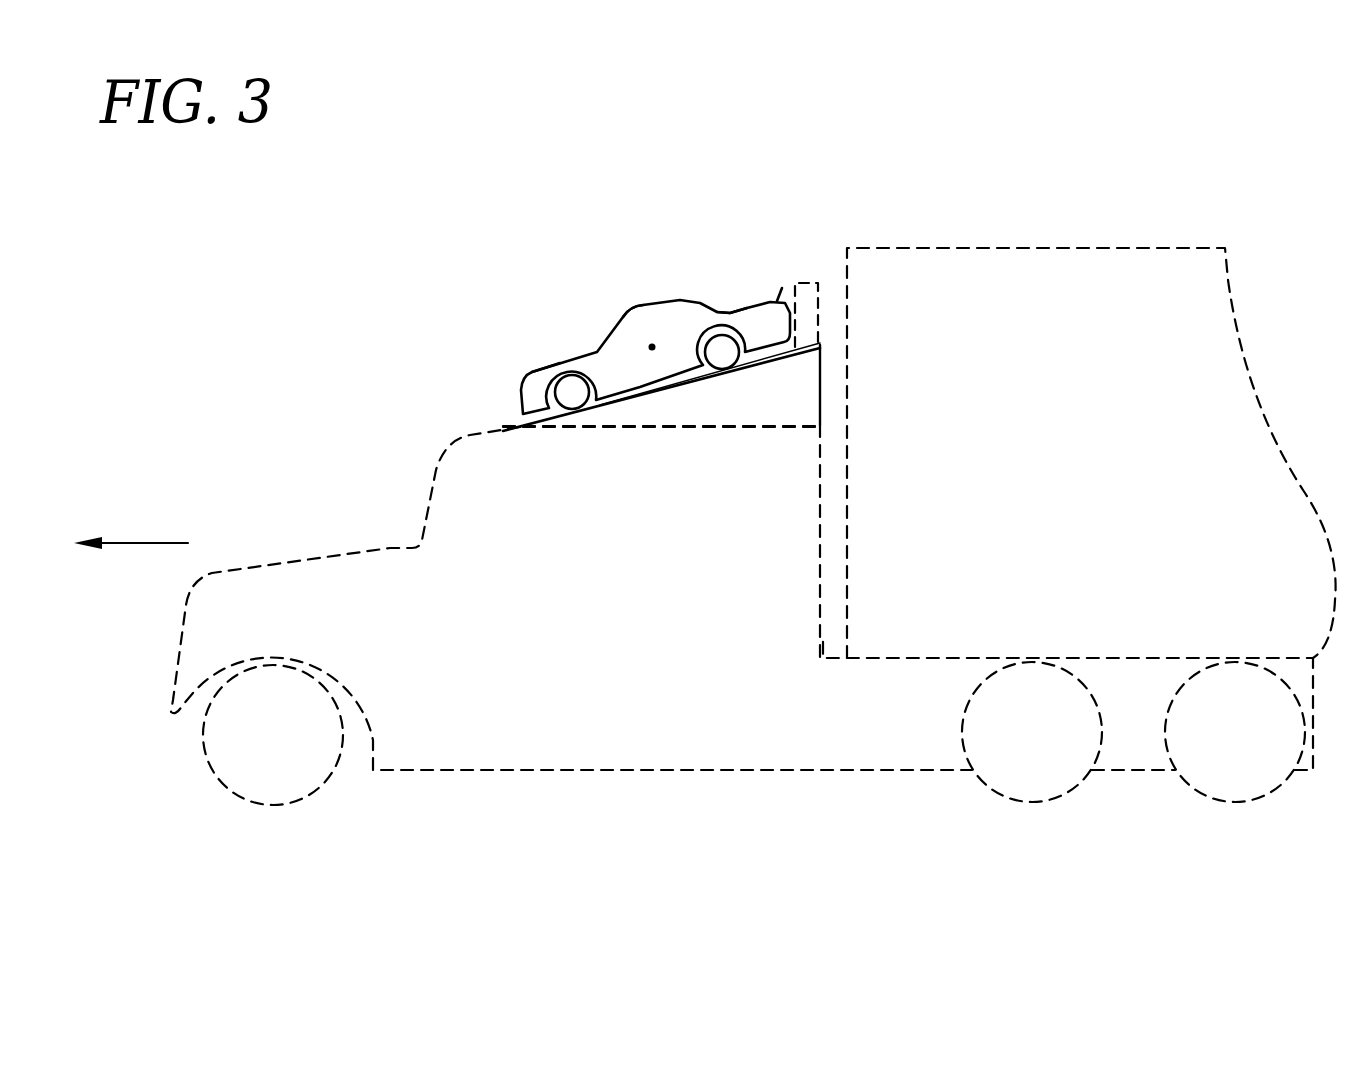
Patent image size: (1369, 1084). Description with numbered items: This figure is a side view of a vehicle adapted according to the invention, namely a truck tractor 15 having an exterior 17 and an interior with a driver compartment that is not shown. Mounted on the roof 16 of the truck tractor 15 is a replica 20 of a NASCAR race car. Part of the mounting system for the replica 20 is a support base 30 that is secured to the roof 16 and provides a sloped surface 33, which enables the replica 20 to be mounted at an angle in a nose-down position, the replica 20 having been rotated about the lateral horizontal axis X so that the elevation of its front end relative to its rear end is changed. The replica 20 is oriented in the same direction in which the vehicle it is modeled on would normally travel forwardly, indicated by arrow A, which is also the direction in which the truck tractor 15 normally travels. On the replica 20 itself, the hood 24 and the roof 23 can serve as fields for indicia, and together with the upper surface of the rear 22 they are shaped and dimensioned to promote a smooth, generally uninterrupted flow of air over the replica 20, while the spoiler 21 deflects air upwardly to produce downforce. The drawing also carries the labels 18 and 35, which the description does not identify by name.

The truck tractor 15 is at (383, 545).
The roof 16 is at (551, 432).
The exterior 17 is at (450, 757).
The cargo box 18 is at (1042, 248).
The replica 20 is at (608, 317).
The spoiler 21 is at (775, 299).
The rear 22 is at (740, 305).
The roof 23 is at (643, 310).
The hood 24 is at (552, 363).
The support base 30 is at (793, 403).
The sloped surface 33 is at (740, 362).
The platform stop bracket 35 is at (815, 283).
The arrow A is at (152, 543).
The lateral horizontal axis X is at (652, 348).